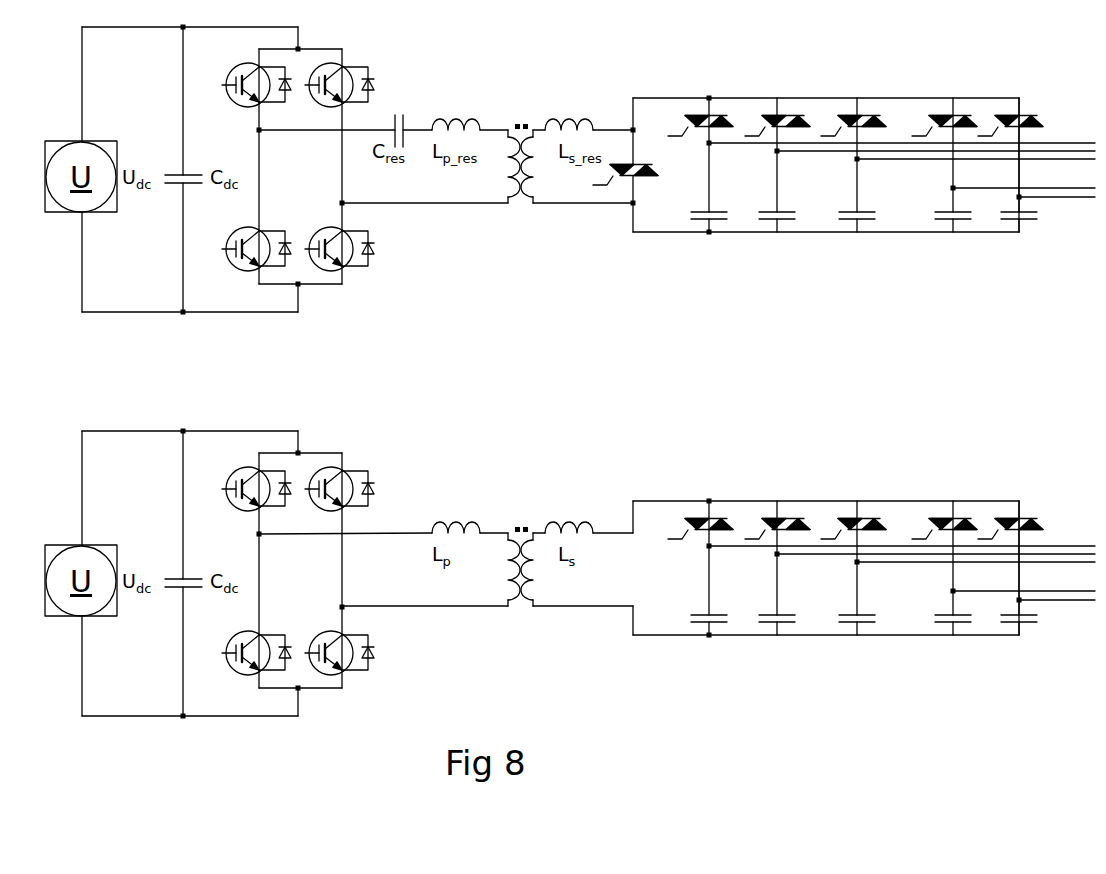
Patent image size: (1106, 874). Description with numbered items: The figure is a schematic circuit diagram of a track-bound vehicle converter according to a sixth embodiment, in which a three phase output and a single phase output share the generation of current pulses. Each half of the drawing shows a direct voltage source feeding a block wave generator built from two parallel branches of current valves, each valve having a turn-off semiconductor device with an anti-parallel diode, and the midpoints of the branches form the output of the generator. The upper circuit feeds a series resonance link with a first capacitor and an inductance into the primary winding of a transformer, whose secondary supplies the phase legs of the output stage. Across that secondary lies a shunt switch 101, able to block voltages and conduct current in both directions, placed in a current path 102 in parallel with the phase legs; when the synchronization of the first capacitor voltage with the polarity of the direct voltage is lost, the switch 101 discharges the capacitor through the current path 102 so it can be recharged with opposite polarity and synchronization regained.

The shunt switch 101 is at (695, 130).
The current path 102 is at (633, 146).